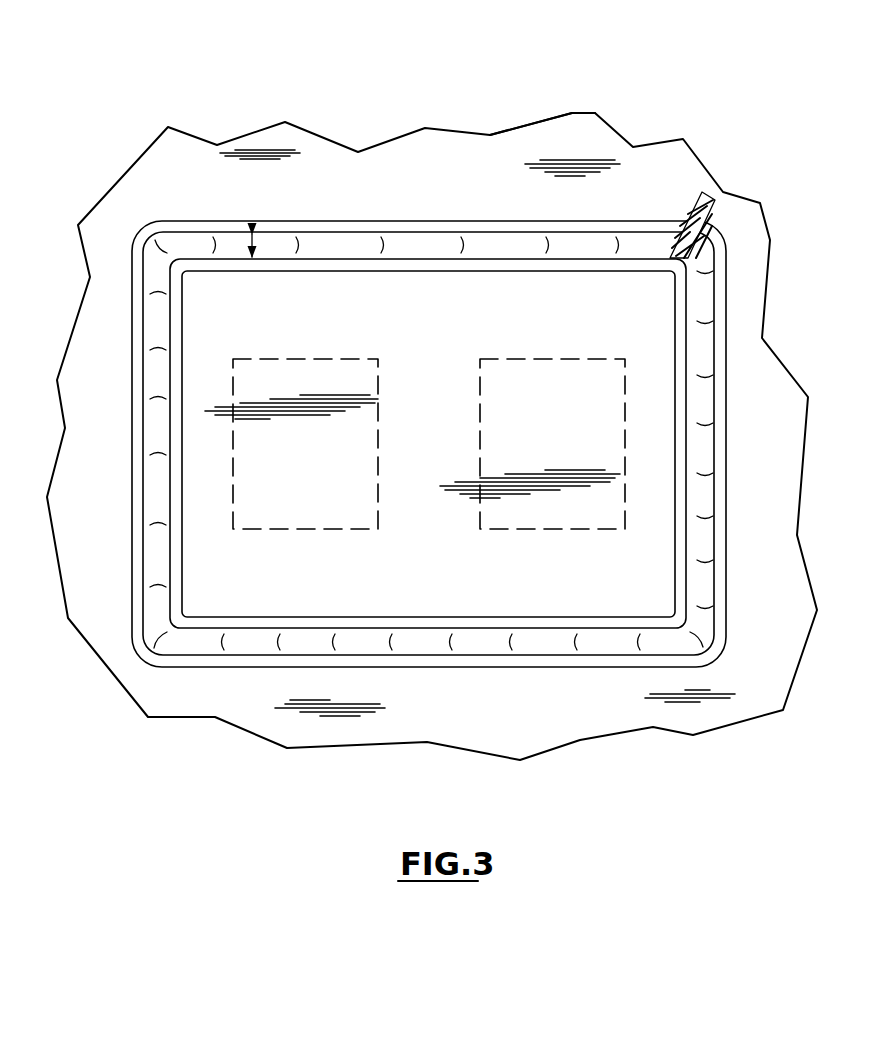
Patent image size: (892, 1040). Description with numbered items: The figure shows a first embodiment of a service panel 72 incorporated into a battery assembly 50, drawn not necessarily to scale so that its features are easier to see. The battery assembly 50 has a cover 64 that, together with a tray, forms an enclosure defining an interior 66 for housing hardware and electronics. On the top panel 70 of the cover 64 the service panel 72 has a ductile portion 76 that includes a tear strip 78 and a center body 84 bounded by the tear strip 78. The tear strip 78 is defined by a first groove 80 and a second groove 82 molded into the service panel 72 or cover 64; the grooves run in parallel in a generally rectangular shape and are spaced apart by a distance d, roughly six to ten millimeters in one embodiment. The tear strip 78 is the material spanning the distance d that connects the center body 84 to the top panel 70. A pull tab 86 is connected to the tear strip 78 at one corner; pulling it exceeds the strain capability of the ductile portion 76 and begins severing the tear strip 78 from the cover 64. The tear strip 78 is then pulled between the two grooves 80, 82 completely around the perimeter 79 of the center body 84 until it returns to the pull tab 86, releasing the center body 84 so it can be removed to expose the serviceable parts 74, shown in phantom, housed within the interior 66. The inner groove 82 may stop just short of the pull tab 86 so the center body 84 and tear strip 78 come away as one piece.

The battery assembly 50 is at (440, 393).
The cover 64 is at (556, 111).
The top panel 70 is at (667, 163).
The service panel 72 is at (483, 413).
The ductile portion 76 is at (203, 211).
The tear strip 78 is at (338, 247).
The first groove 80 is at (445, 227).
The second groove 82 is at (410, 262).
The center body 84 is at (438, 443).
The pull tab 86 is at (698, 205).
The distance d is at (253, 245).
The perimeter 79 is at (189, 376).
The serviceable parts 74 is at (300, 505).
The interior 66 is at (428, 494).